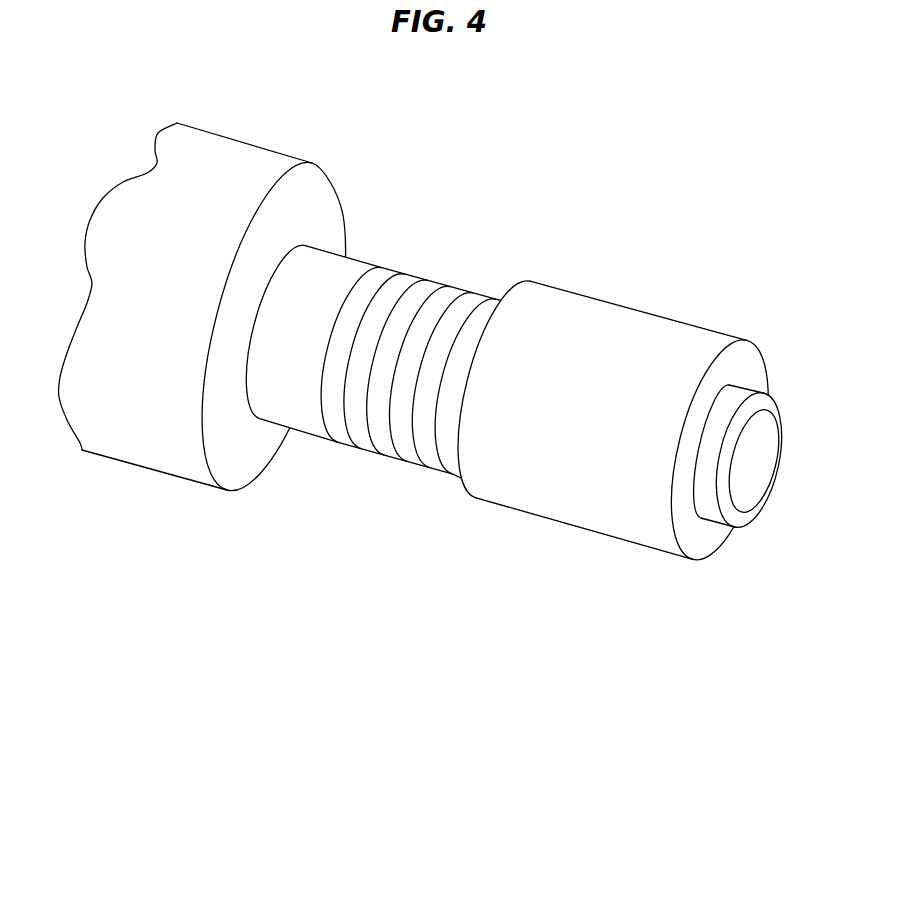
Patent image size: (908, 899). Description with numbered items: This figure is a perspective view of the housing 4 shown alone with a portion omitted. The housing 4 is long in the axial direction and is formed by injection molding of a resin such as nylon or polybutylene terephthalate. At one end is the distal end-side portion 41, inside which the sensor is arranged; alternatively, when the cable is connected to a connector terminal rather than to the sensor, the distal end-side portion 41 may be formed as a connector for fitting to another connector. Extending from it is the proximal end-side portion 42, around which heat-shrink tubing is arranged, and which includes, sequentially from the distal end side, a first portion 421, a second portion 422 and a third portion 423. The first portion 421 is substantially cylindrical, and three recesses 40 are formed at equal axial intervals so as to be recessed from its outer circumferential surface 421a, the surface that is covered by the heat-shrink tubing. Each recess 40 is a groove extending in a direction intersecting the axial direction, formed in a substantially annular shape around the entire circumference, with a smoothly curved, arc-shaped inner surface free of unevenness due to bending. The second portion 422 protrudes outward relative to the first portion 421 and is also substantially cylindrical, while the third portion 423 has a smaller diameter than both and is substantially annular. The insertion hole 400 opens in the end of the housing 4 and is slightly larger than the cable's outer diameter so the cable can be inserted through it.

The housing 4 is at (744, 220).
The recess 40 is at (383, 277).
The distal end-side portion 41 is at (210, 133).
The proximal end-side portion 42 is at (638, 310).
The insertion hole 400 is at (763, 463).
The first portion 421 is at (407, 445).
The outer circumferential surface 421a is at (303, 420).
The second portion 422 is at (550, 502).
The third portion 423 is at (718, 513).